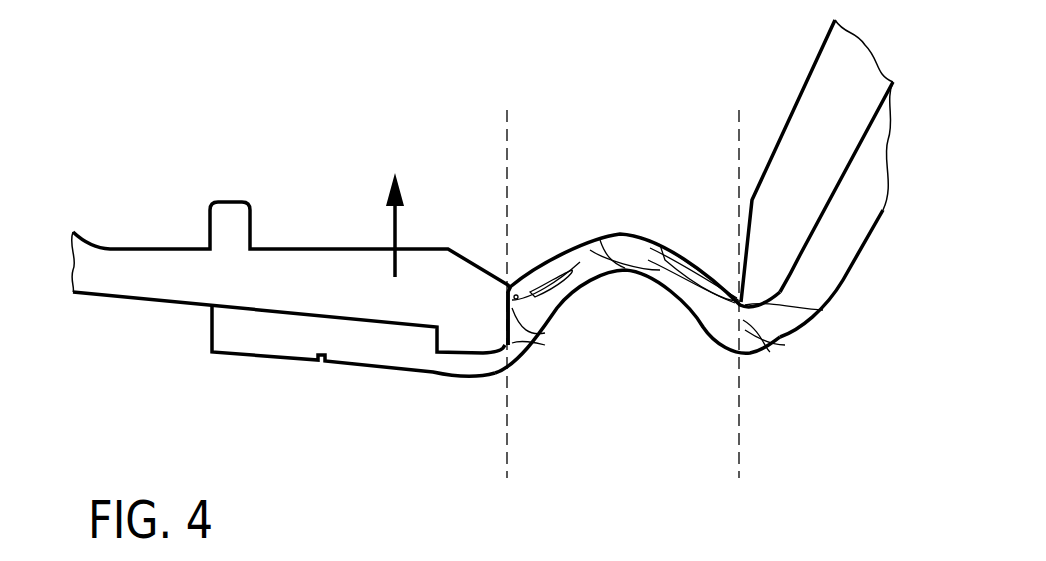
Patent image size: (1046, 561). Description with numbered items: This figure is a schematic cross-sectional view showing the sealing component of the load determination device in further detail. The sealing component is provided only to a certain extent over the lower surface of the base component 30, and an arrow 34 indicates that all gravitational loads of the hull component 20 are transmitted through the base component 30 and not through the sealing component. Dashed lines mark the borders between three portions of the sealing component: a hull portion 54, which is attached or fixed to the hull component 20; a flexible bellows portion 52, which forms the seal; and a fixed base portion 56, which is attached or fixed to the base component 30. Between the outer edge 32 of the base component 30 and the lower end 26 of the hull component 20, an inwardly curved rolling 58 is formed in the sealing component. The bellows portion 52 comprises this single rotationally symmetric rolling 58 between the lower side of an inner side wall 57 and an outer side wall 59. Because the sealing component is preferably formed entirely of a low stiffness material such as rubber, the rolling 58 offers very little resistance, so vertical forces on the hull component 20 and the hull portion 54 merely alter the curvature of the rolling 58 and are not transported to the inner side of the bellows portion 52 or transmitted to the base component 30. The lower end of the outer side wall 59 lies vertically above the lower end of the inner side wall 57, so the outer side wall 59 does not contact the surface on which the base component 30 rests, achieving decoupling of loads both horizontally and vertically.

The hull component 20 is at (835, 88).
The lower end of hull component 26 is at (770, 230).
The base component 30 is at (153, 278).
The outer edge of base component 32 is at (508, 288).
The arrow 34 is at (392, 228).
The bellows portion 52 is at (629, 384).
The hull portion 54 is at (863, 215).
The base portion 56 is at (305, 340).
The inner side wall 57 is at (513, 360).
The rolling 58 is at (628, 237).
The outer side wall 59 is at (742, 343).